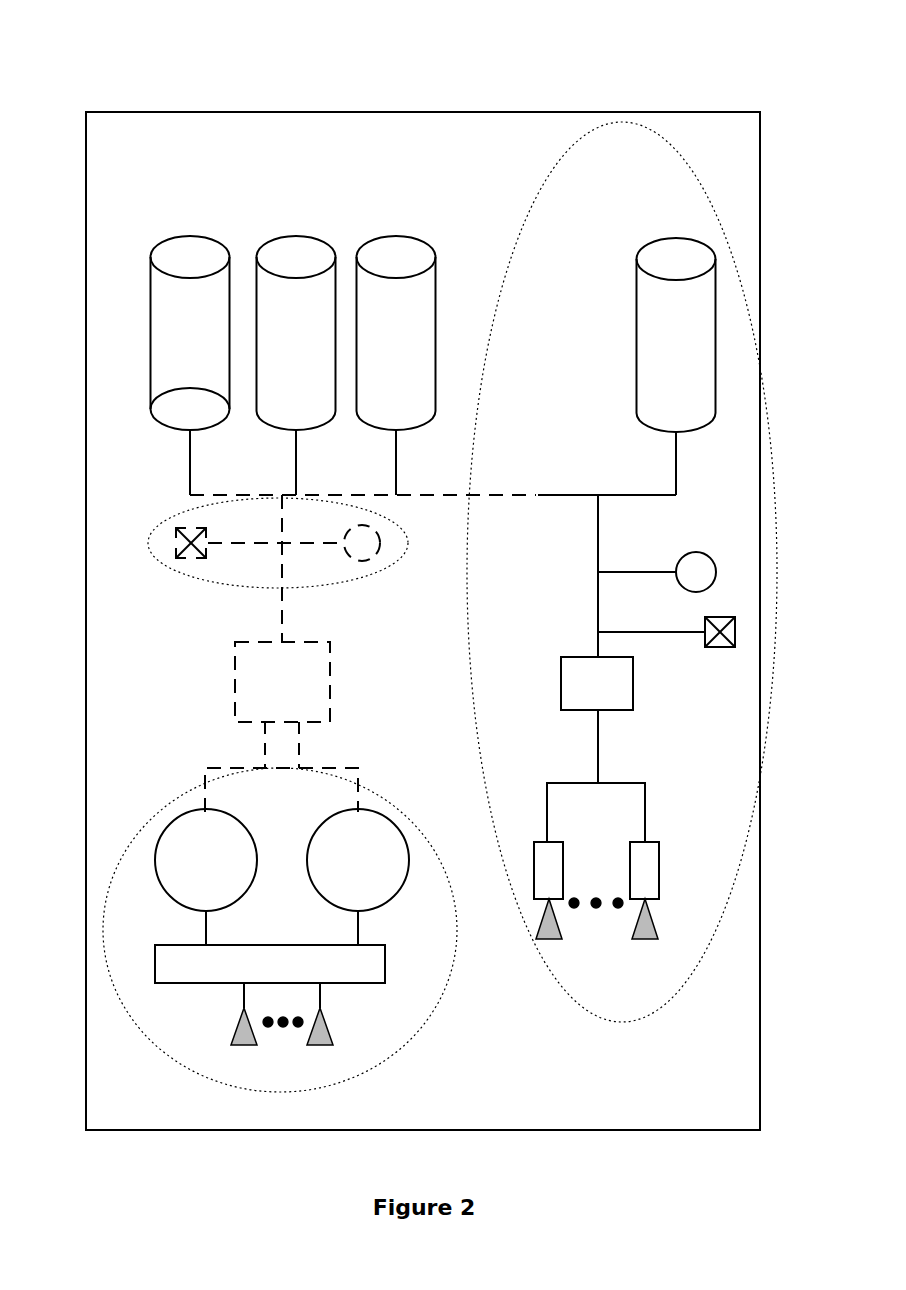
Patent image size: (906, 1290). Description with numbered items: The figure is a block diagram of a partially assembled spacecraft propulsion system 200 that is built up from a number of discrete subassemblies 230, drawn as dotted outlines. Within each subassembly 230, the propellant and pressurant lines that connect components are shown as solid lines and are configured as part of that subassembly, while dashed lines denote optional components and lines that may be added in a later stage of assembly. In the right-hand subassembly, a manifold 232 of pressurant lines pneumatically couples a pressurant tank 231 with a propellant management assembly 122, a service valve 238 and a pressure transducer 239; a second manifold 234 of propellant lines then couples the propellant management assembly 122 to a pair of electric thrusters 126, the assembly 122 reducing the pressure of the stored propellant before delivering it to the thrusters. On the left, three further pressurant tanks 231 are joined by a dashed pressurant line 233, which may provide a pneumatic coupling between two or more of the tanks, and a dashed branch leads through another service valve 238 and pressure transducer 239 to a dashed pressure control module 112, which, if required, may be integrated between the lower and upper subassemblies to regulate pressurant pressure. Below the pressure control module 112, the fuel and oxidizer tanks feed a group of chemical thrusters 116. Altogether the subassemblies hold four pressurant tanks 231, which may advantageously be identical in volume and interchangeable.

The partially assembled propulsion system 200 is at (144, 86).
The pressurant tank 231 is at (174, 356).
The pressurant line 233 is at (425, 495).
The manifold 232 is at (575, 500).
The subassembly 230 is at (440, 607).
The service valve 238 is at (419, 587).
The pressure transducer 239 is at (547, 562).
The pressure control module 112 is at (263, 693).
The chemical thrusters 116 is at (236, 1026).
The propellant management assembly 122 is at (578, 692).
The manifold 234 is at (598, 752).
The electric thrusters 126 is at (660, 862).